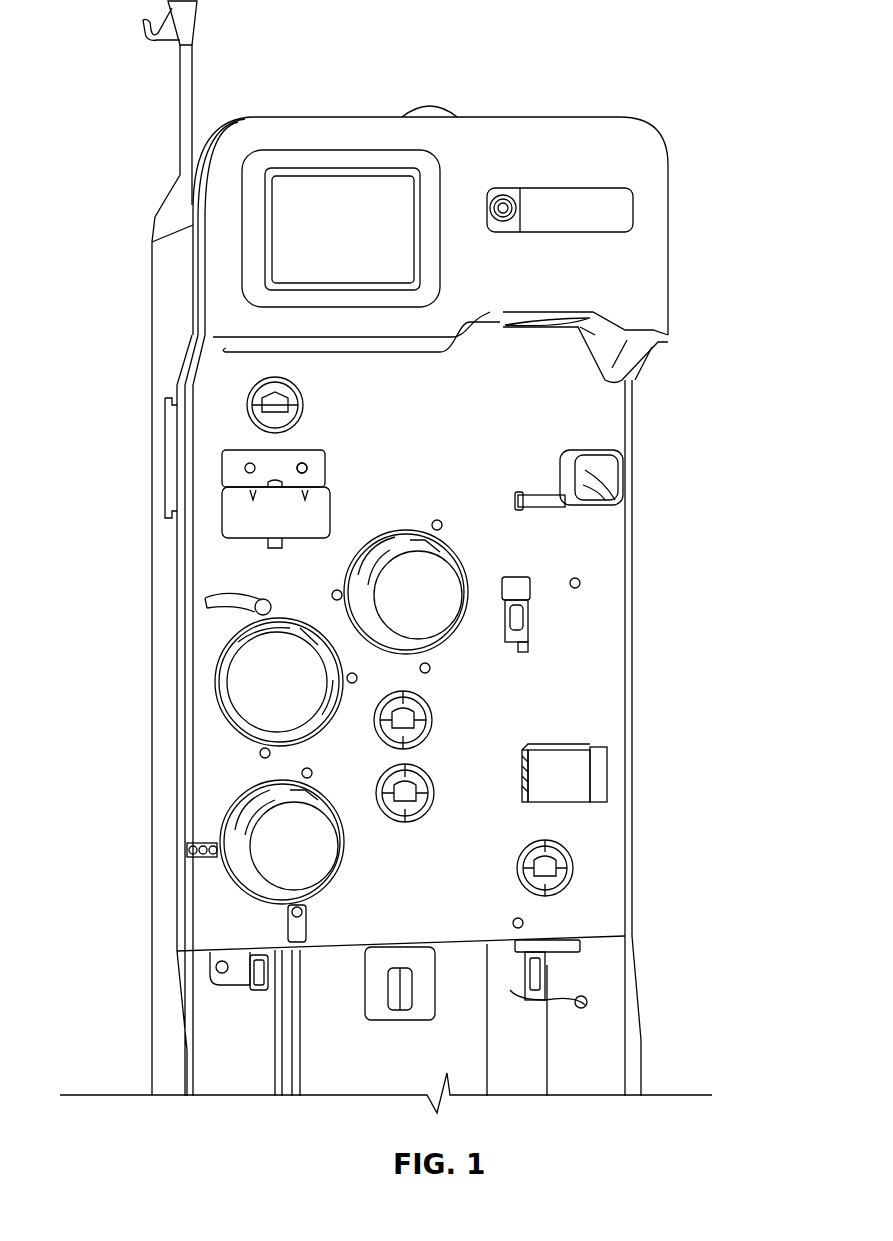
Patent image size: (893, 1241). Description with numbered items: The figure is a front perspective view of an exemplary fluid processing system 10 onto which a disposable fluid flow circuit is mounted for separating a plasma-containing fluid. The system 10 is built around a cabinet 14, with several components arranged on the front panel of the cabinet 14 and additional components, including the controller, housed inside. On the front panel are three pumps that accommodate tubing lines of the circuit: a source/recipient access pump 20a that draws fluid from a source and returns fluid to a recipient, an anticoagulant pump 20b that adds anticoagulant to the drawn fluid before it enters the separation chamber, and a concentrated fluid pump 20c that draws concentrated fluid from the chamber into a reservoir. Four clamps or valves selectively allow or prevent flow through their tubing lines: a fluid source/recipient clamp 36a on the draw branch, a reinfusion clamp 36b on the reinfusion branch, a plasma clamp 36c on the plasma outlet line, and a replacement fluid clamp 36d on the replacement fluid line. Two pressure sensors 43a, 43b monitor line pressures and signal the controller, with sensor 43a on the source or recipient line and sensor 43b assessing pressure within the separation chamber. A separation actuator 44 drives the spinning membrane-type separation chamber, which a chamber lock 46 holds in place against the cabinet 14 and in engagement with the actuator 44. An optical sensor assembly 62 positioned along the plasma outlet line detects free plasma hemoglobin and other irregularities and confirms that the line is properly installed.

The fluid processing system 10 is at (165, 495).
The cabinet 14 is at (657, 252).
The source/recipient access pump 20a is at (270, 843).
The anticoagulant pump 20b is at (247, 692).
The concentrated fluid pump 20c is at (438, 580).
The fluid source/recipient clamp 36a is at (413, 715).
The reinfusion clamp 36b is at (413, 790).
The plasma clamp 36c is at (555, 870).
The replacement fluid clamp 36d is at (262, 405).
The pressure sensor 43a is at (248, 468).
The pressure sensor 43b is at (300, 466).
The separation actuator 44 is at (598, 333).
The chamber lock 46 is at (615, 468).
The optical sensor assembly 62 is at (558, 775).